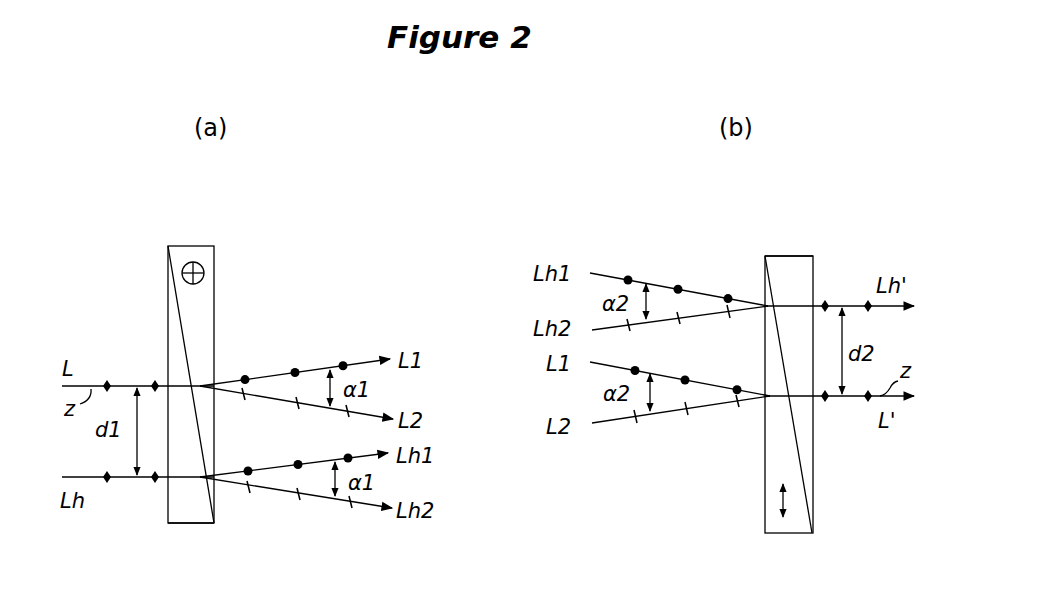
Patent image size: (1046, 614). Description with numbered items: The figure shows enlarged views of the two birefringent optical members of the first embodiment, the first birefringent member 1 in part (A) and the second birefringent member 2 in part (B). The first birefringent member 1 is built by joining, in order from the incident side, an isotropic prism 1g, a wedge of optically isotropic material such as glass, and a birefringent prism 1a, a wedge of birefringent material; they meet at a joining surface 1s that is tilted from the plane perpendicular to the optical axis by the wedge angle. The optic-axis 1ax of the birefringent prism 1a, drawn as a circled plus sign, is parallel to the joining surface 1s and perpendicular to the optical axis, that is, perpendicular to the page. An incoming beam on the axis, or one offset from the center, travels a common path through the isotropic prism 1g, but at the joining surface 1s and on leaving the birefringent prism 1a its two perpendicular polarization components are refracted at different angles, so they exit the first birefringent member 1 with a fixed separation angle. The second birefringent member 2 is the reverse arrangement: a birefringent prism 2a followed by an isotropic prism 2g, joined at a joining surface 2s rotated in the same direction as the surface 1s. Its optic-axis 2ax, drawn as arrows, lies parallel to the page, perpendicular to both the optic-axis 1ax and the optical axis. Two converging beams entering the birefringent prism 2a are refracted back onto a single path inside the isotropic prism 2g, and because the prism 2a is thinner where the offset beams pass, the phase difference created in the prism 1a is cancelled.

The first birefringent member 1 is at (194, 374).
The birefringent prism 1a is at (208, 305).
The optic-axis of the first birefringent prism 1ax is at (205, 269).
The joining surface 1s is at (182, 326).
The isotropic prism 1g is at (185, 515).
The second birefringent member 2 is at (776, 354).
The birefringent prism 2a is at (771, 458).
The optic-axis of the second birefringent prism 2ax is at (782, 498).
The joining surface 2s is at (798, 465).
The isotropic prism 2g is at (800, 265).